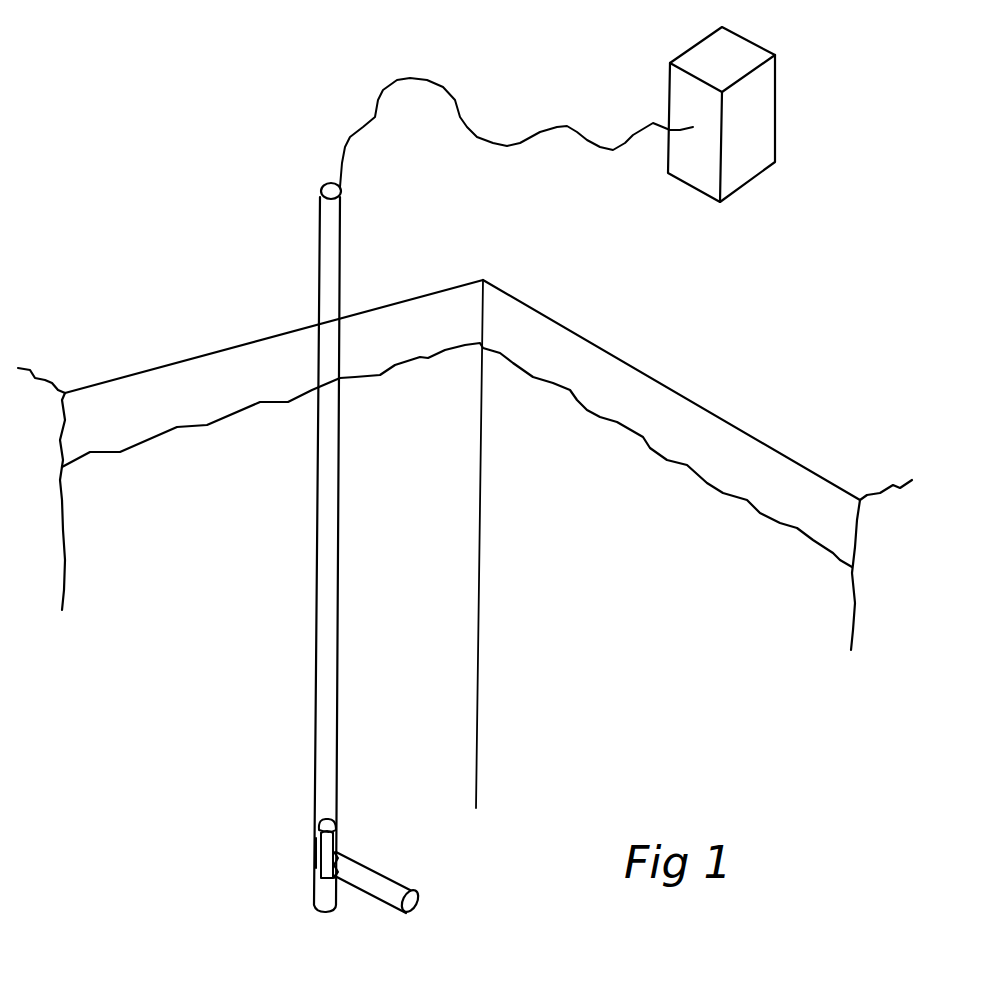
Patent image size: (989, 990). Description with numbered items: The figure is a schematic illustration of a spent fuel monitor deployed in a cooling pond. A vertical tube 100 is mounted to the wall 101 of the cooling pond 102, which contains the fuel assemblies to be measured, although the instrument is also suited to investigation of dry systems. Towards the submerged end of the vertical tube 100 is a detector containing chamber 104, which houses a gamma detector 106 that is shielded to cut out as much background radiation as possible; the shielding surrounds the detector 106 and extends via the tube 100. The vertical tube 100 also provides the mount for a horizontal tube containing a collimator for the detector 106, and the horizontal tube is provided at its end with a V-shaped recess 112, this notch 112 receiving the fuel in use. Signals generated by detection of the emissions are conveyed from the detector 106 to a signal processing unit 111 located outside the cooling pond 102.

The vertical tube 100 is at (327, 570).
The wall 101 is at (254, 302).
The cooling pond 102 is at (206, 630).
The detector containing chamber 104 is at (333, 818).
The detector 106 is at (334, 850).
The signal processing unit 111 is at (743, 167).
The V-shaped recess 112 is at (418, 902).